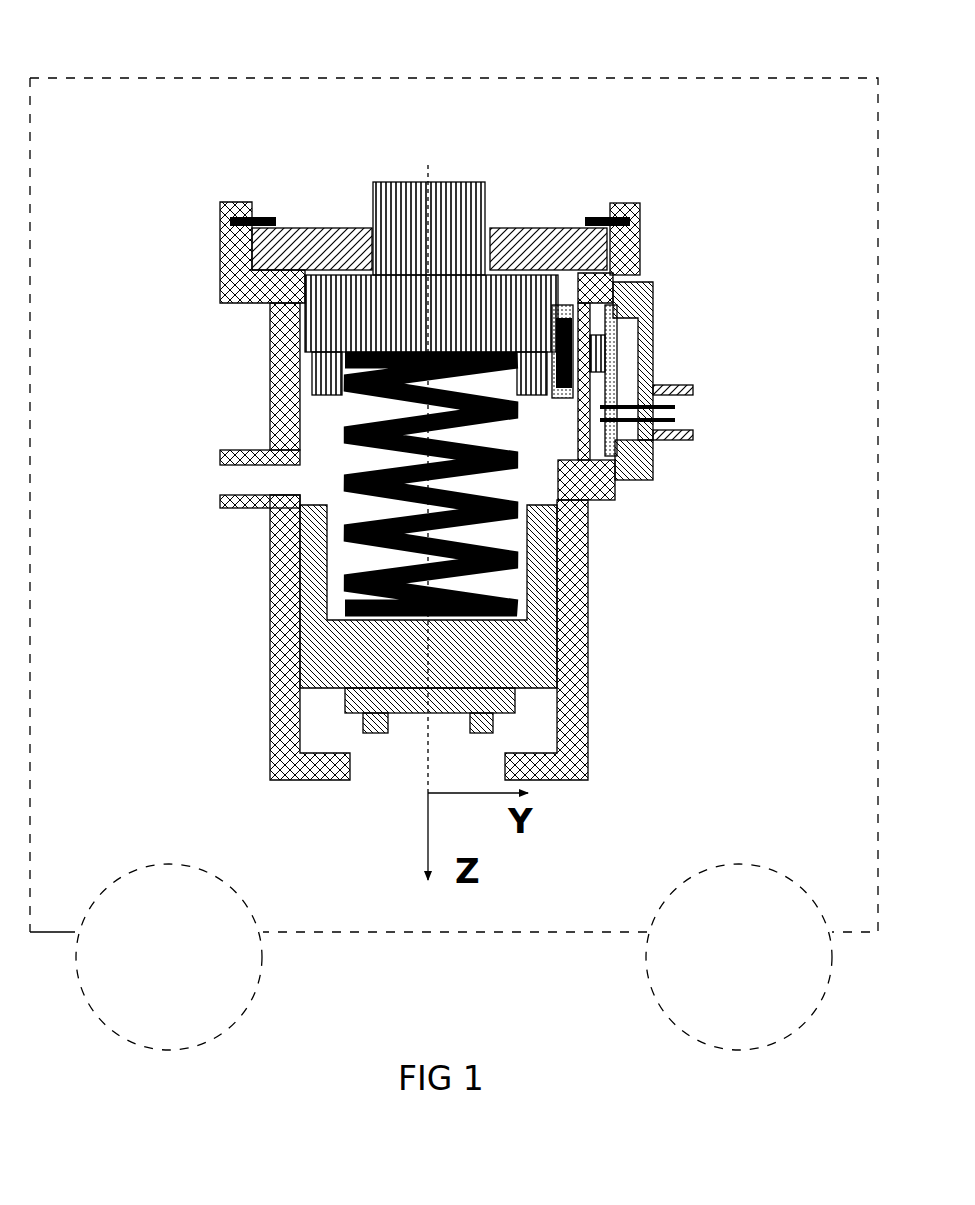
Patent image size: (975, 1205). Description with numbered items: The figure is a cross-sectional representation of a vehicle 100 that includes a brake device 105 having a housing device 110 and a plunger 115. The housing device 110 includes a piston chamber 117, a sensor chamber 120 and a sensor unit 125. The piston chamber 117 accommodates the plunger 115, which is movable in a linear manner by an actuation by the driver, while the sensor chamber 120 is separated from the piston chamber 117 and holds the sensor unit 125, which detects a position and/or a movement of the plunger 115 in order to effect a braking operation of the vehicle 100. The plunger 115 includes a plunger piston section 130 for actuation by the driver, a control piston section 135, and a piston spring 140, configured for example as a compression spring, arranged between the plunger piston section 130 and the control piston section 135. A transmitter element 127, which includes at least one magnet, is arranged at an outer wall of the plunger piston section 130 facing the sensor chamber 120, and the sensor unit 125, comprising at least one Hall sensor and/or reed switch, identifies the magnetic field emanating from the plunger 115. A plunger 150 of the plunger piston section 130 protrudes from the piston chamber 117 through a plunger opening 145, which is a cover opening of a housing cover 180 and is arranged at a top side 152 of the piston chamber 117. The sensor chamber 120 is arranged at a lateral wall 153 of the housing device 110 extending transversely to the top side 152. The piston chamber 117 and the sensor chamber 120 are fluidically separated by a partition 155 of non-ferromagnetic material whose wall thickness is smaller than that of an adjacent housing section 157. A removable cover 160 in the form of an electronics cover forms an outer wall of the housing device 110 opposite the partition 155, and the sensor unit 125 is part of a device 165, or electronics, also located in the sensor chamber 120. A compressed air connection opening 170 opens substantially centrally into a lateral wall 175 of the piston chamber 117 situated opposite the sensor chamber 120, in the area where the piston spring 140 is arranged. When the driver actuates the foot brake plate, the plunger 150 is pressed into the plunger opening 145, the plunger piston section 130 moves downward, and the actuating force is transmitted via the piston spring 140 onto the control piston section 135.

The vehicle 100 is at (170, 78).
The brake device 105 is at (195, 172).
The housing device 110 is at (635, 188).
The plunger 115 is at (467, 167).
The piston chamber 117 is at (327, 455).
The sensor chamber 120 is at (653, 467).
The sensor unit 125 is at (605, 353).
The transmitter element 127 is at (653, 297).
The plunger piston section 130 is at (505, 300).
The control piston section 135 is at (310, 625).
The piston spring 140 is at (495, 575).
The plunger opening 145 is at (495, 218).
The plunger 150 is at (410, 220).
The top side 152 is at (318, 195).
The lateral wall 153 is at (590, 705).
The partition 155 is at (598, 393).
The housing section 157 is at (643, 250).
The cover 160 is at (653, 367).
The device 165 is at (655, 397).
The compressed air connection opening 170 is at (238, 475).
The lateral wall 175 is at (260, 373).
The housing cover 180 is at (300, 245).